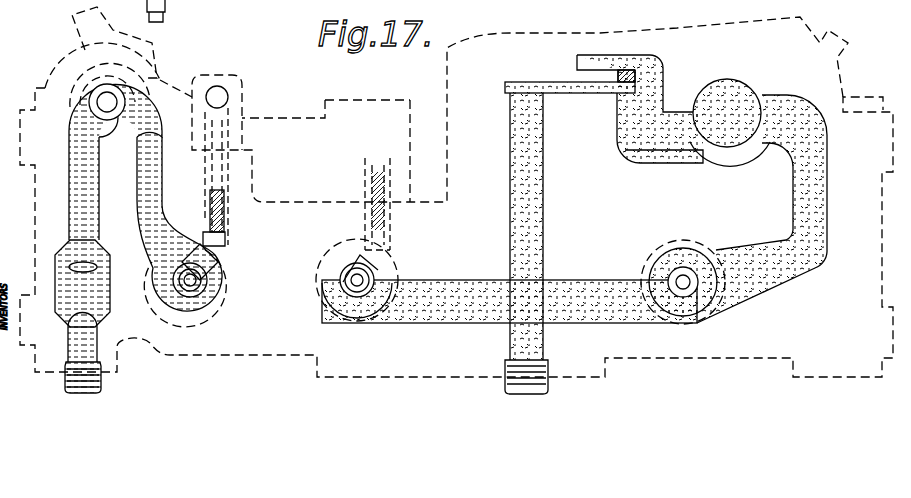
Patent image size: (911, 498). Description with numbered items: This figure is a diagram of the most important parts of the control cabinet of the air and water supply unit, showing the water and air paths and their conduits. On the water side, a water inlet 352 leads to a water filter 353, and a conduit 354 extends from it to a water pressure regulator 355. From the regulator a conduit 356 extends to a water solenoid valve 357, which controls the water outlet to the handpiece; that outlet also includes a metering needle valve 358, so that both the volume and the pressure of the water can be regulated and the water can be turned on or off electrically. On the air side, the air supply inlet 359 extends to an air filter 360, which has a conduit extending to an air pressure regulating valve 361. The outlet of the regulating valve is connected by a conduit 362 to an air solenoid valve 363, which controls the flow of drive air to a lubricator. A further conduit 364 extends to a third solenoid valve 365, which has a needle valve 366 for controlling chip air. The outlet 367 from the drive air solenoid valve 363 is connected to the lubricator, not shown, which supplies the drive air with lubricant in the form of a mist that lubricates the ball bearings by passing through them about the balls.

The water inlet 352 is at (66, 381).
The water filter 353 is at (62, 278).
The conduit 354 is at (72, 193).
The water pressure regulator 355 is at (100, 94).
The conduit 356 is at (192, 180).
The water solenoid valve 357 is at (230, 278).
The metering needle valve 358 is at (224, 217).
The air supply inlet 359 is at (543, 378).
The air filter 360 is at (620, 55).
The air pressure regulating valve 361 is at (748, 84).
The conduit 362 is at (828, 177).
The air solenoid valve 363 is at (706, 247).
The conduit 364 is at (597, 268).
The third solenoid valve 365 is at (411, 276).
The needle valve 366 is at (393, 214).
The outlet 367 is at (692, 292).